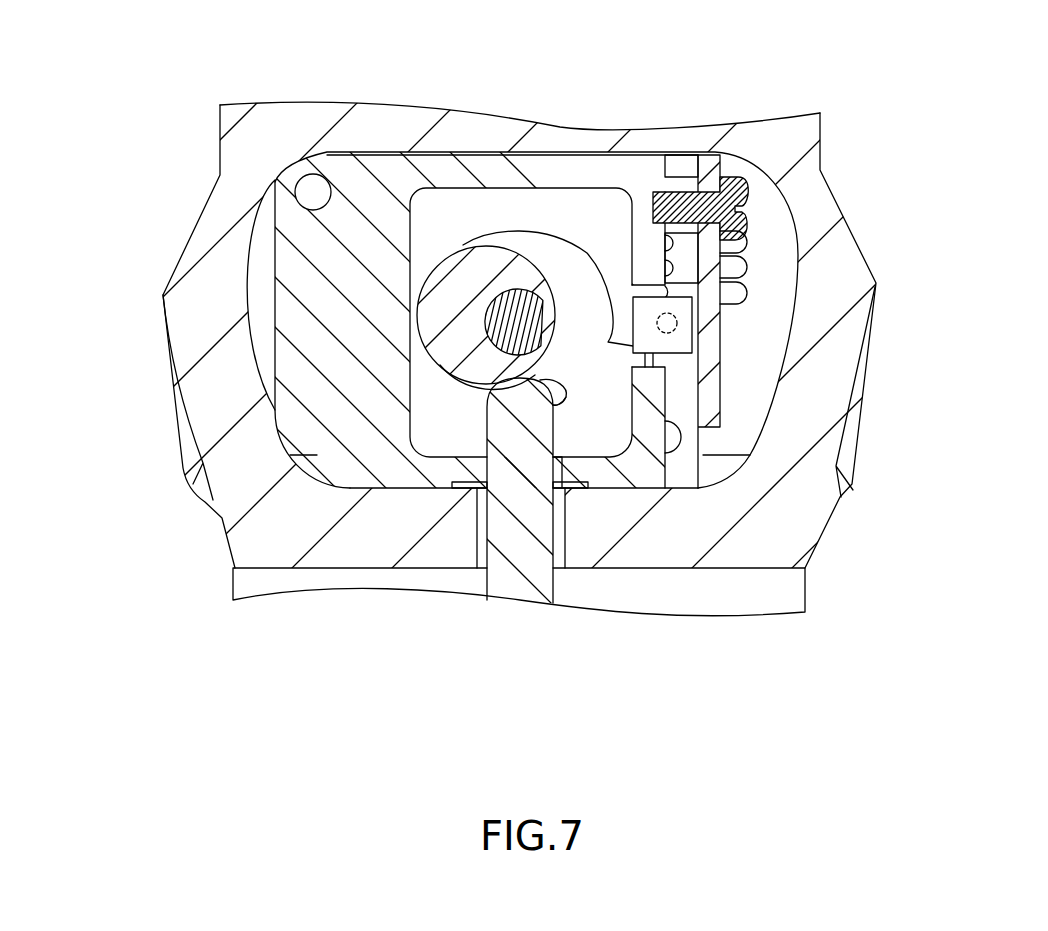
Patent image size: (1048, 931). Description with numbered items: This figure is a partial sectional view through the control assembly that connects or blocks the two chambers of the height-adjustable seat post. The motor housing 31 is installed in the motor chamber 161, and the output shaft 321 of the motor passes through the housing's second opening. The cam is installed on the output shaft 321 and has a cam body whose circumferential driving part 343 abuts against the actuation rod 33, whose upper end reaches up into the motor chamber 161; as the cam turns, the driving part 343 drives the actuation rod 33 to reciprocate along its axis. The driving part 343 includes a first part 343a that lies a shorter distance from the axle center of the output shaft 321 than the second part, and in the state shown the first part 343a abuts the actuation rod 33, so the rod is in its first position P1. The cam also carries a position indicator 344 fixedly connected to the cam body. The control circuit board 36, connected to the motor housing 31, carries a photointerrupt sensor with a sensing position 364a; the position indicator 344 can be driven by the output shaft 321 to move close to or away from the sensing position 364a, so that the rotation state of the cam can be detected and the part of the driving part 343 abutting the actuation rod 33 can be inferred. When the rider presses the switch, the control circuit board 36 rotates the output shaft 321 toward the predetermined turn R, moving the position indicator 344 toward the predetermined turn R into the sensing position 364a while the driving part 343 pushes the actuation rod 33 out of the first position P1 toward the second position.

The motor housing 31 is at (355, 188).
The actuation rod 33 is at (503, 577).
The control circuit board 36 is at (726, 162).
The motor chamber 161 is at (768, 252).
The output shaft 321 is at (523, 297).
The driving part 343 is at (461, 245).
The first part 343a is at (497, 383).
The position indicator 344 is at (608, 413).
The sensing position 364a is at (677, 322).
The first position P1 is at (566, 398).
The predetermined turn R is at (554, 278).